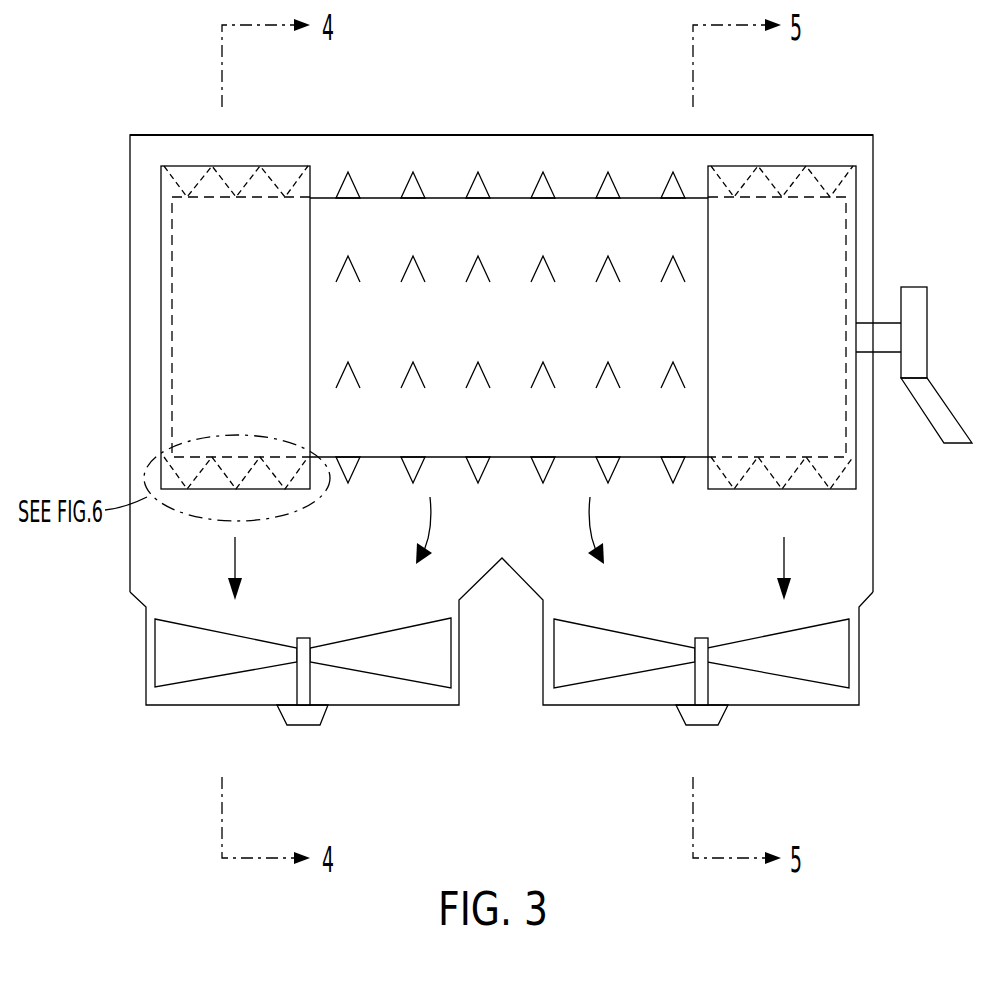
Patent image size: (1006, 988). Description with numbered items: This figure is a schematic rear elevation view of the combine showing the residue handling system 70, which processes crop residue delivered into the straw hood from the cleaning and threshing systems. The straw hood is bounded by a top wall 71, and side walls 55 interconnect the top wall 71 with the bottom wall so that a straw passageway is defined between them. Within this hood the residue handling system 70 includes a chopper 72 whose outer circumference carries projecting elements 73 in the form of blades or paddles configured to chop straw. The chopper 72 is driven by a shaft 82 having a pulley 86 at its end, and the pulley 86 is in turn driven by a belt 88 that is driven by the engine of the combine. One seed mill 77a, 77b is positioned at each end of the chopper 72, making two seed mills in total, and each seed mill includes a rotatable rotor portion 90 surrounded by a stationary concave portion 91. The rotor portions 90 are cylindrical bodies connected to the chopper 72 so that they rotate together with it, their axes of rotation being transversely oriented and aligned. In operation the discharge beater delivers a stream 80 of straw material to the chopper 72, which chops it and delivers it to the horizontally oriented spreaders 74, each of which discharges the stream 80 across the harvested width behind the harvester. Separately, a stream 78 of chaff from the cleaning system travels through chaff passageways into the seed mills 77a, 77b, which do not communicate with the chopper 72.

The residue handling system 70 is at (912, 148).
The top wall 71 is at (415, 135).
The chopper 72 is at (515, 215).
The projecting elements 73 is at (614, 196).
The spreaders 74 is at (250, 660).
The seed mill 77a is at (160, 325).
The seed mill 77b is at (858, 233).
The stream of chaff 78 is at (237, 568).
The stream of straw material 80 is at (440, 507).
The shaft 82 is at (876, 340).
The pulley 86 is at (915, 330).
The belt 88 is at (945, 414).
The rotor portion 90 is at (200, 247).
The concave portion 91 is at (183, 167).
The side walls 55 is at (873, 548).